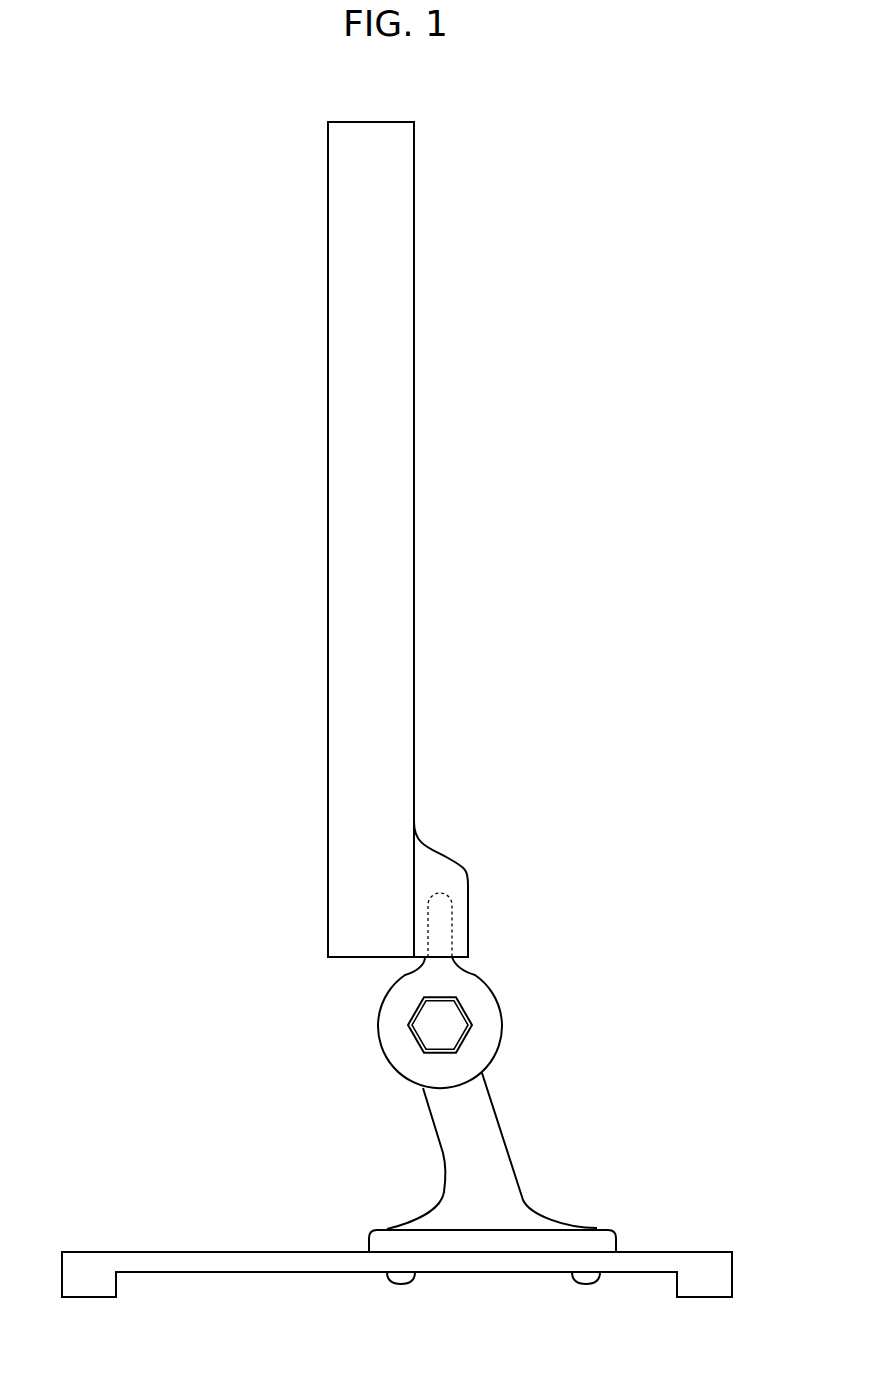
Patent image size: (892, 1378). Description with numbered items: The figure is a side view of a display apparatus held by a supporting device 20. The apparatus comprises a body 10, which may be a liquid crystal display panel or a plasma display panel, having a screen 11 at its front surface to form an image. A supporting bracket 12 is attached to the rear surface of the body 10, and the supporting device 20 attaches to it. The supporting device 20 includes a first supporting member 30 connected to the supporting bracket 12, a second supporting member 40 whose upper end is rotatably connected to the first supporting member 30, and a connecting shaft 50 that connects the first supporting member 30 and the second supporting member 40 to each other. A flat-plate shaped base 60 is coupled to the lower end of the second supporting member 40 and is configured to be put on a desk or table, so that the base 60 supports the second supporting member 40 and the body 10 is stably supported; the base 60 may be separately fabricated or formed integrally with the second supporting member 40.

The body 10 is at (398, 275).
The screen 11 is at (328, 363).
The supporting bracket 12 is at (443, 857).
The supporting device 20 is at (496, 1081).
The first supporting member 30 is at (398, 998).
The second supporting member 40 is at (487, 1132).
The connecting shaft 50 is at (427, 1032).
The base 60 is at (193, 1258).